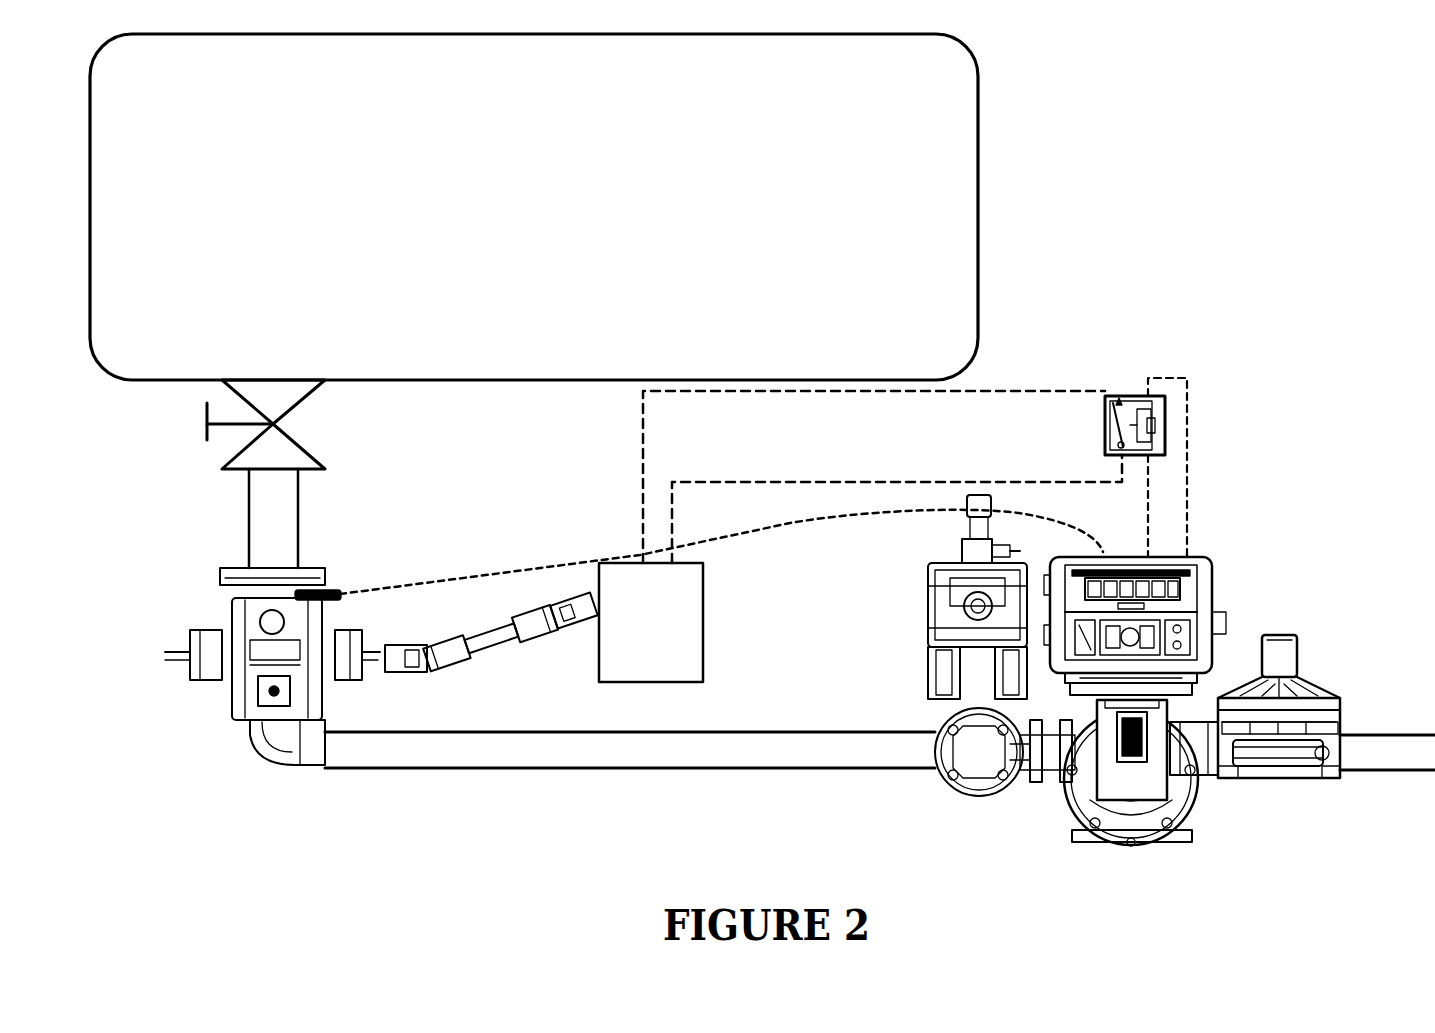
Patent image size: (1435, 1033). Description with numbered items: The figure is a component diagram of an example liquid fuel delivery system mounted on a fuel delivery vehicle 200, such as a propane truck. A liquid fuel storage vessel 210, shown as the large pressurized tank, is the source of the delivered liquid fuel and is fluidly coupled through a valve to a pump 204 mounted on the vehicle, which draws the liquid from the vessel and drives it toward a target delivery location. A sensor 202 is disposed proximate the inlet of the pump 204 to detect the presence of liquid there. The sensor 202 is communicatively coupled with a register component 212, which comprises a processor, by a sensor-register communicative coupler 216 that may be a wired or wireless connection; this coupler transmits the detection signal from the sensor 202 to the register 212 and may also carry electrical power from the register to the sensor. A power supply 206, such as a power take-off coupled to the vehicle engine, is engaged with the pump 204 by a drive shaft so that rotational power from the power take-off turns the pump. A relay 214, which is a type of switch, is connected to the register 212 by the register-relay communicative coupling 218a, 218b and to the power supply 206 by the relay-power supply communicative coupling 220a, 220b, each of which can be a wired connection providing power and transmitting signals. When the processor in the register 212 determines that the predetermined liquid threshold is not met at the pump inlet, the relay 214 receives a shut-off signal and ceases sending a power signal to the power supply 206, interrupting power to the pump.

The fuel delivery vehicle 200 is at (1343, 82).
The sensor 202 is at (325, 585).
The pump 204 is at (208, 600).
The power supply 206 is at (633, 624).
The liquid fuel storage vessel 210 is at (505, 226).
The register component 212 is at (1212, 540).
The relay 214 is at (1133, 383).
The sensor-register communicative coupler 216 is at (573, 548).
The register-relay communicative coupling 218a is at (1187, 422).
The register-relay communicative coupling 218b is at (1150, 492).
The relay-power supply communicative coupling 220a is at (995, 392).
The relay-power supply communicative coupling 220b is at (860, 482).